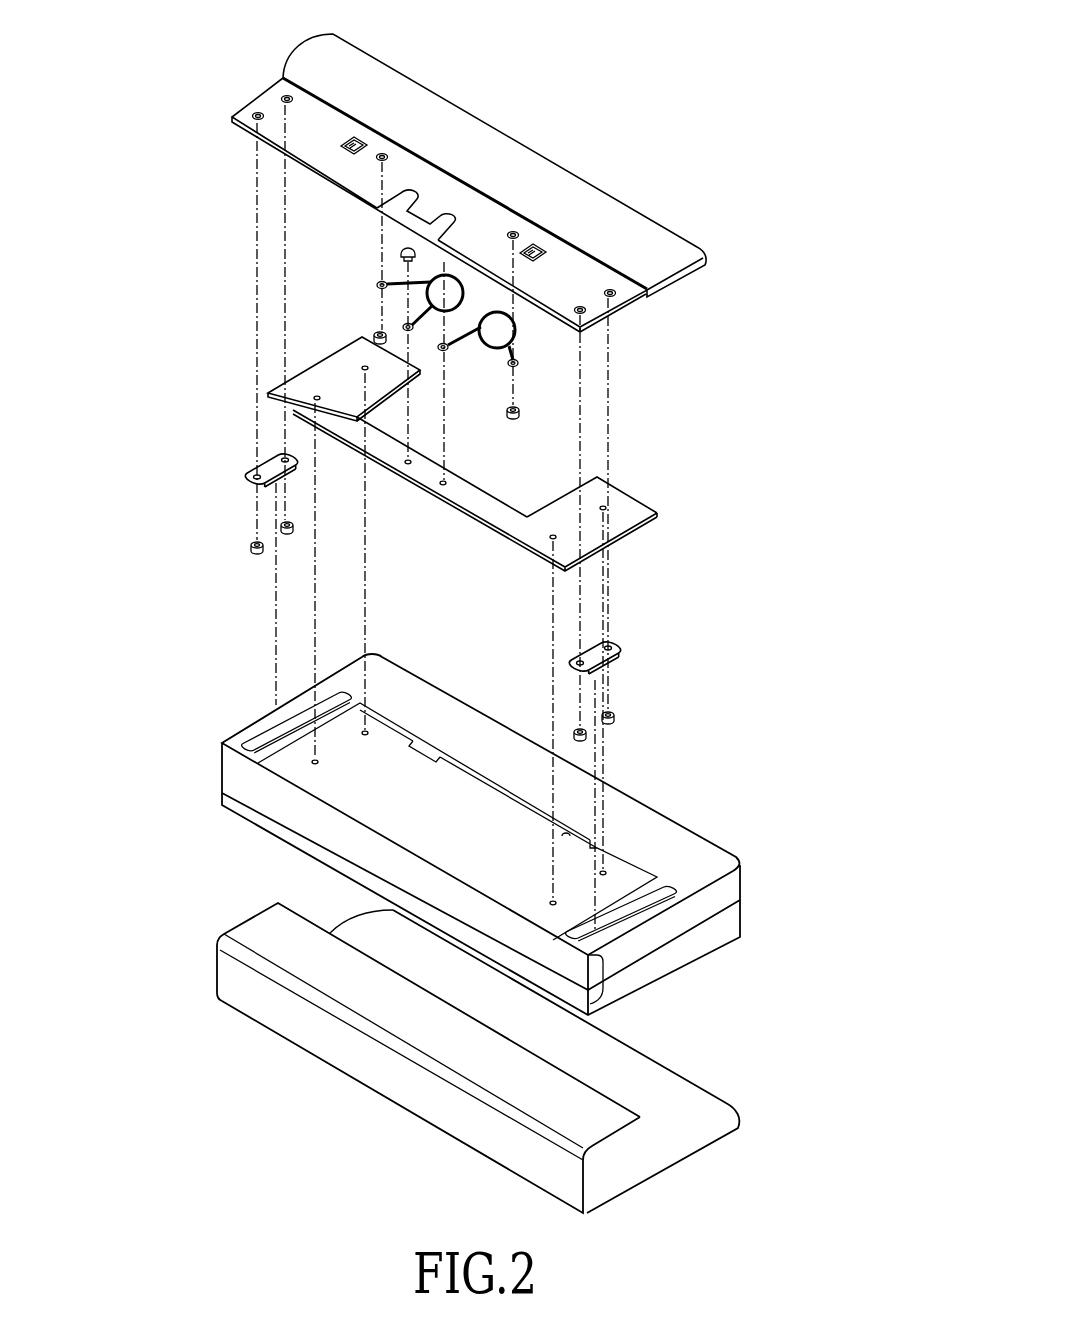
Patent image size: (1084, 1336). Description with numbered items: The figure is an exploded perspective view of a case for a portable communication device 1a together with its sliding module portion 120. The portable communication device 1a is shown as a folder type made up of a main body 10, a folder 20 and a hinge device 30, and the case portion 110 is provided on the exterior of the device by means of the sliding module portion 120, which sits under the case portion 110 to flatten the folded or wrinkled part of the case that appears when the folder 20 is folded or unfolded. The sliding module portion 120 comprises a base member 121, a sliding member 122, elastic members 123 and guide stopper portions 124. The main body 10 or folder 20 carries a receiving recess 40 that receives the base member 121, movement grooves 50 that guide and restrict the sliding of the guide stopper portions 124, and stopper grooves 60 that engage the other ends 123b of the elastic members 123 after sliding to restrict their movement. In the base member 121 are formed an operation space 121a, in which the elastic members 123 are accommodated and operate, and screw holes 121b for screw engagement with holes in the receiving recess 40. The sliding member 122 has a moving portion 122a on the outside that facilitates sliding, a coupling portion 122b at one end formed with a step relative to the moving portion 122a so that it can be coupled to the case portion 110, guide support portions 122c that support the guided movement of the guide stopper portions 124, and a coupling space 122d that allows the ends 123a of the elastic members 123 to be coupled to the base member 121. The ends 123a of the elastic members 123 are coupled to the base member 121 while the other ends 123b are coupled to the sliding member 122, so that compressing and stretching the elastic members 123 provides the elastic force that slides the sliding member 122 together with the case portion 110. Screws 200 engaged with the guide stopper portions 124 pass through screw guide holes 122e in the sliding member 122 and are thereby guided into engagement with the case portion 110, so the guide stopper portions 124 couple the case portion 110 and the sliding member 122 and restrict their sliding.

The portable communication device 1a is at (840, 850).
The main body 10 is at (737, 916).
The folder 20 is at (728, 888).
The hinge device 30 is at (597, 988).
The receiving recess 40 is at (393, 755).
The movement grooves 50 is at (262, 742).
The stopper grooves 60 is at (566, 843).
The case portion 110 is at (251, 932).
The sliding module portion 120 is at (850, 85).
The base member 121 is at (789, 403).
The operation space 121a is at (536, 453).
The screw holes 121b is at (560, 537).
The sliding member 122 is at (757, 22).
The moving portion 122a is at (483, 217).
The coupling portion 122b is at (493, 163).
The guide support portions 122c is at (300, 96).
The coupling space 122d is at (447, 222).
The screw guide holes 122e is at (258, 116).
The elastic members 123 is at (110, 282).
The ends of the elastic members 123a is at (362, 337).
The other ends of the elastic members 123b is at (377, 284).
The guide stopper portions 124 is at (617, 644).
The screws 200 is at (402, 248).